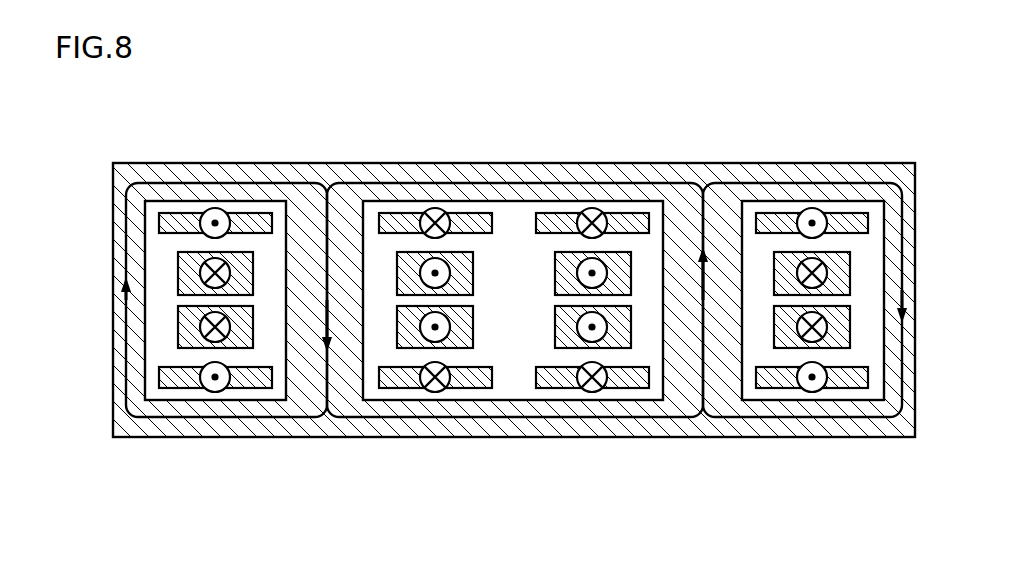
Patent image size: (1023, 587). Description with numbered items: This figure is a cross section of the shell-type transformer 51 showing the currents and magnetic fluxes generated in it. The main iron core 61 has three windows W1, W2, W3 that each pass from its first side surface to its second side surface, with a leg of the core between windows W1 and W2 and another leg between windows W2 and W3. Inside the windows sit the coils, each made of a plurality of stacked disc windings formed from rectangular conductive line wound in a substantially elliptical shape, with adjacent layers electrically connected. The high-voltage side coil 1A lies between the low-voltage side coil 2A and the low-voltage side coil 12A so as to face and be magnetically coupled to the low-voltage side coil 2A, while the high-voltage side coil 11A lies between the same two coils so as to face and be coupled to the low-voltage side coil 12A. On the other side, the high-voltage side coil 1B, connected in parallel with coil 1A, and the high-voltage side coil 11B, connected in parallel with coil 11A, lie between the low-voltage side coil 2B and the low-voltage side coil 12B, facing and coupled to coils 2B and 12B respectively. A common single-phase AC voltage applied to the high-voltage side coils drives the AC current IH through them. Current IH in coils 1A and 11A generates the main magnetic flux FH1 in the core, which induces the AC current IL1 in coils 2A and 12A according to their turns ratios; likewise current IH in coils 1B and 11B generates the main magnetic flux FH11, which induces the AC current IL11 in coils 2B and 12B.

The transformer 51 is at (888, 75).
The main iron core 61 is at (900, 178).
The AC current IH is at (188, 274).
The high-voltage side coil 1A is at (186, 263).
The high-voltage side coil 11A is at (190, 337).
The low-voltage side coil 2A is at (255, 222).
The low-voltage side coil 12A is at (252, 384).
The high-voltage side coil 1B is at (618, 263).
The high-voltage side coil 11B is at (620, 335).
The low-voltage side coil 2B is at (562, 222).
The low-voltage side coil 12B is at (553, 384).
The AC current IL1 is at (215, 209).
The AC current IL11 is at (812, 209).
The window W1 is at (277, 386).
The window W2 is at (498, 388).
The window W3 is at (875, 386).
The main magnetic flux FH1 is at (124, 296).
The main magnetic flux FH11 is at (905, 290).